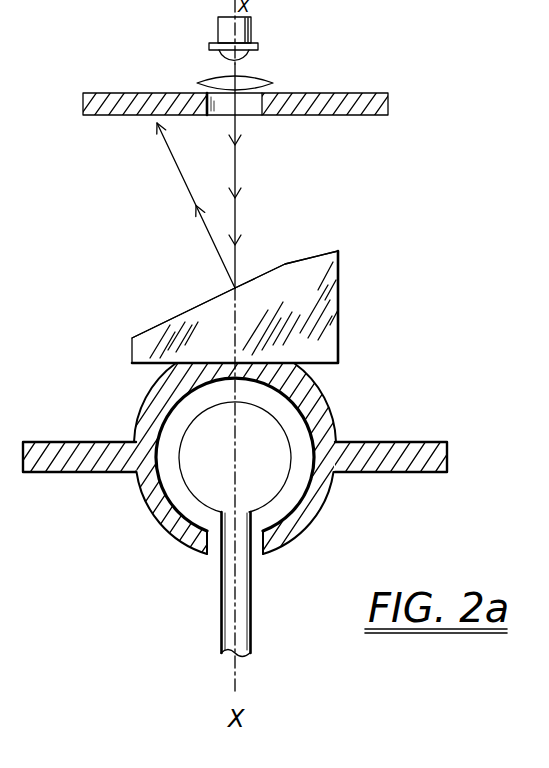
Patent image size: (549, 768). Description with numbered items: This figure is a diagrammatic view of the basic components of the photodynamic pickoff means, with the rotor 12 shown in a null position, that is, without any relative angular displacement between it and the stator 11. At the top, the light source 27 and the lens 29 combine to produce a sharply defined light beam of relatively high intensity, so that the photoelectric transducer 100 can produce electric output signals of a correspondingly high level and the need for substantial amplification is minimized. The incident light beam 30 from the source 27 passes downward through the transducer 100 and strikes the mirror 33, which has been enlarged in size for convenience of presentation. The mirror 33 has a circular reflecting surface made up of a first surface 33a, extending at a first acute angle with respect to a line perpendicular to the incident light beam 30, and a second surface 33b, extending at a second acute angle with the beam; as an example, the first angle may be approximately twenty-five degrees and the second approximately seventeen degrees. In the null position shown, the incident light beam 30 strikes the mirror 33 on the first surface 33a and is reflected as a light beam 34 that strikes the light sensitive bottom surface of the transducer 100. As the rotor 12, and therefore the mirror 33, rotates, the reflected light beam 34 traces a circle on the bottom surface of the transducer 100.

The light source 27 is at (251, 30).
The lens 29 is at (255, 78).
The photoelectric transducer 100 is at (368, 93).
The incident light beam 30 is at (237, 170).
The reflected light beam 34 is at (178, 163).
The mirror 33 is at (211, 286).
The first surface 33a is at (190, 311).
The second surface 33b is at (313, 257).
The rotor 12 is at (132, 419).
The stator 11 is at (269, 474).